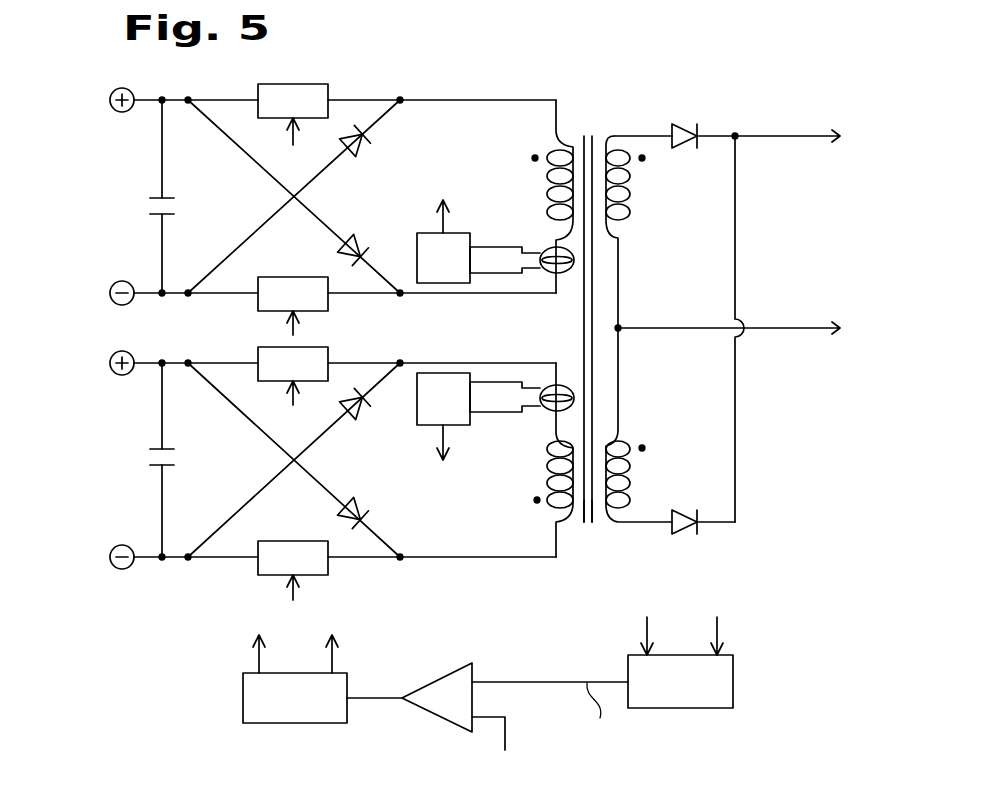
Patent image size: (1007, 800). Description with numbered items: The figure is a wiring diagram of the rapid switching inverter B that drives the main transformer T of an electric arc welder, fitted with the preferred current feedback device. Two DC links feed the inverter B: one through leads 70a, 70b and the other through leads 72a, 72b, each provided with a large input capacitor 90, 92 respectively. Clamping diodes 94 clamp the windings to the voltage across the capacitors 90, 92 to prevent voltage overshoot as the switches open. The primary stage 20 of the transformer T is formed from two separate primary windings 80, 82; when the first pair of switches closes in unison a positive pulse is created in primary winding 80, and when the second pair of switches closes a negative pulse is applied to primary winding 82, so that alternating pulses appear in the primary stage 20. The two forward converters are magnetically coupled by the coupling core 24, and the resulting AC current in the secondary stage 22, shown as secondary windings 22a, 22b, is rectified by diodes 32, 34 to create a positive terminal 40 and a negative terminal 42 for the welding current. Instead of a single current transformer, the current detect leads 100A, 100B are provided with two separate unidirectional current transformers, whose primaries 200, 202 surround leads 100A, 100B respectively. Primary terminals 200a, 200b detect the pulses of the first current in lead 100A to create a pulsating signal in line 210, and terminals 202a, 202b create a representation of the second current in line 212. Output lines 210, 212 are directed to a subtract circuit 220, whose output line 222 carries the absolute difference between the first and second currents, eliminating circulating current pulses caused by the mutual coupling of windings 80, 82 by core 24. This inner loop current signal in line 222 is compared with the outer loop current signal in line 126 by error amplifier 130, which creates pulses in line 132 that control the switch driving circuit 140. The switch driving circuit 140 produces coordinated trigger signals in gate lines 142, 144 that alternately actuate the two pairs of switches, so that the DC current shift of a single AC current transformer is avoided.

The primary stage 20 is at (576, 113).
The secondary stage 22 is at (663, 289).
The secondary winding 22a is at (628, 192).
The secondary winding 22b is at (630, 475).
The coupling core 24 is at (590, 523).
The diode 32 is at (680, 147).
The diode 34 is at (682, 525).
The positive terminal 40 is at (805, 135).
The negative terminal 42 is at (807, 327).
The lead 70a is at (148, 103).
The lead 70b is at (148, 292).
The lead 72a is at (148, 365).
The lead 72b is at (148, 556).
The primary winding 80 is at (545, 186).
The primary winding 82 is at (547, 476).
The capacitor 90 is at (172, 208).
The capacitor 92 is at (172, 460).
The clamping diode 94 is at (367, 165).
The current detect lead 100A is at (482, 295).
The current detect lead 100B is at (436, 362).
The outer loop current signal line 126 is at (505, 748).
The error amplifier 130 is at (447, 670).
The output line 132 is at (377, 700).
The switch driving circuit 140 is at (295, 723).
The trigger output 142 is at (255, 646).
The trigger output 144 is at (330, 660).
The current transformer primary 200 is at (574, 262).
The primary terminal 200a is at (497, 247).
The primary terminal 200b is at (500, 273).
The current transformer primary 202 is at (574, 400).
The primary terminal 202a is at (493, 382).
The primary terminal 202b is at (500, 412).
The output line 210 is at (435, 223).
The output line 212 is at (435, 432).
The subtract circuit 220 is at (747, 681).
The output line 222 is at (548, 680).
The inverter B is at (464, 79).
The main transformer T is at (614, 92).